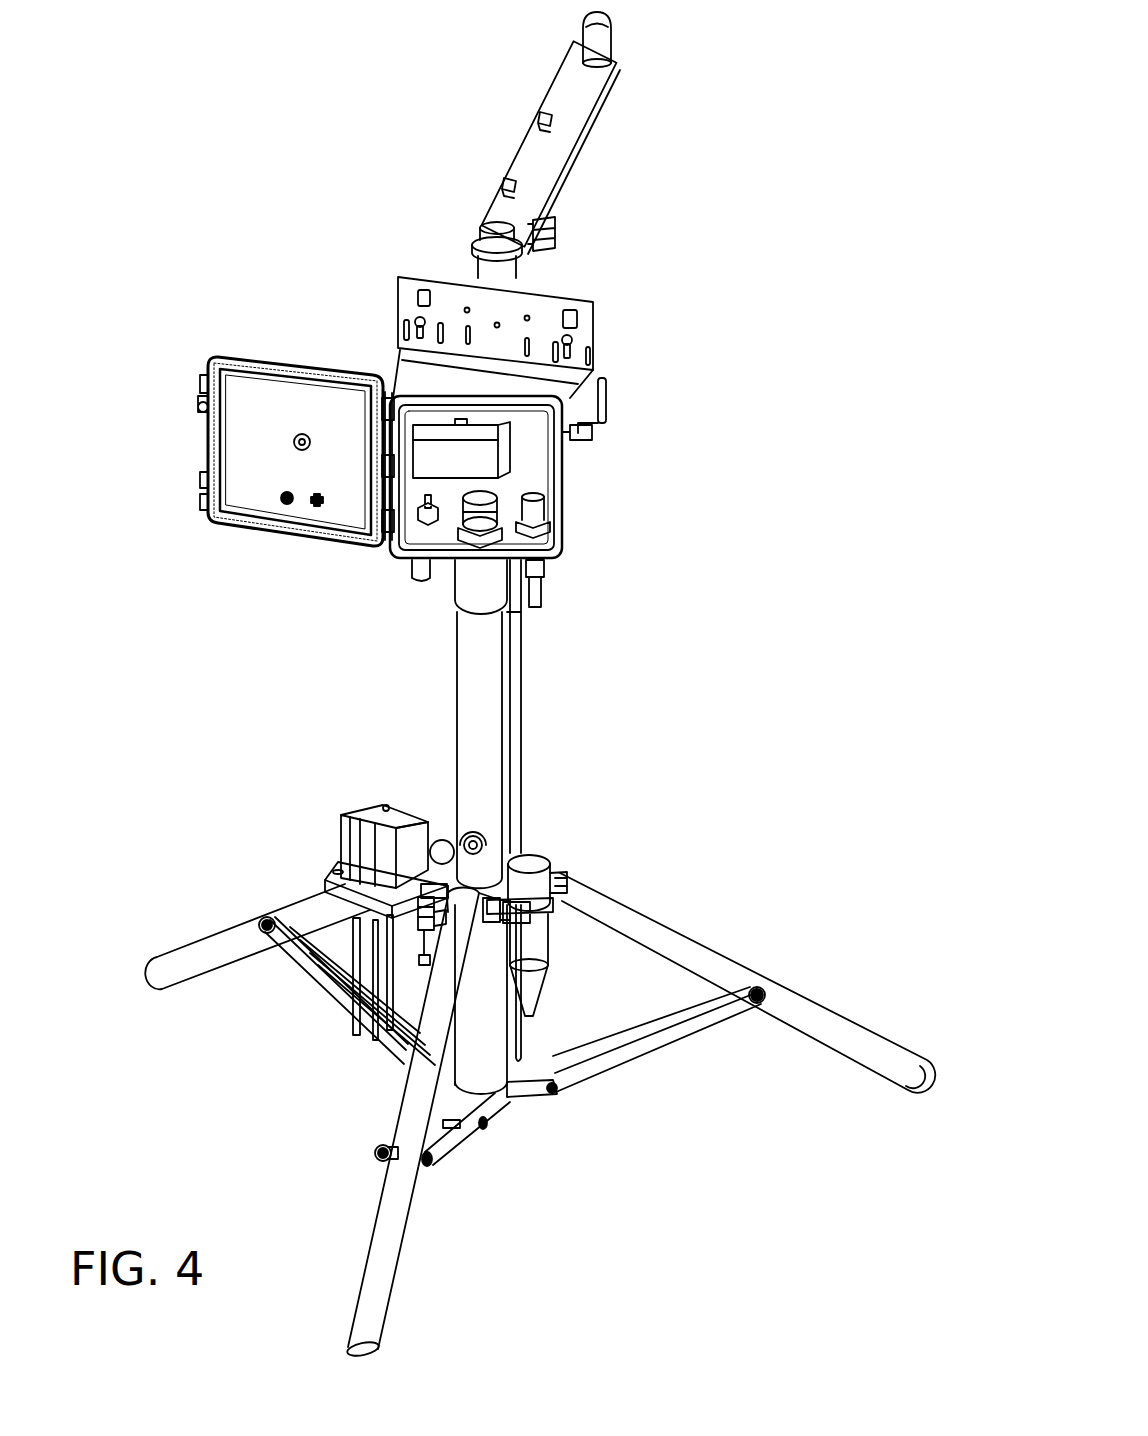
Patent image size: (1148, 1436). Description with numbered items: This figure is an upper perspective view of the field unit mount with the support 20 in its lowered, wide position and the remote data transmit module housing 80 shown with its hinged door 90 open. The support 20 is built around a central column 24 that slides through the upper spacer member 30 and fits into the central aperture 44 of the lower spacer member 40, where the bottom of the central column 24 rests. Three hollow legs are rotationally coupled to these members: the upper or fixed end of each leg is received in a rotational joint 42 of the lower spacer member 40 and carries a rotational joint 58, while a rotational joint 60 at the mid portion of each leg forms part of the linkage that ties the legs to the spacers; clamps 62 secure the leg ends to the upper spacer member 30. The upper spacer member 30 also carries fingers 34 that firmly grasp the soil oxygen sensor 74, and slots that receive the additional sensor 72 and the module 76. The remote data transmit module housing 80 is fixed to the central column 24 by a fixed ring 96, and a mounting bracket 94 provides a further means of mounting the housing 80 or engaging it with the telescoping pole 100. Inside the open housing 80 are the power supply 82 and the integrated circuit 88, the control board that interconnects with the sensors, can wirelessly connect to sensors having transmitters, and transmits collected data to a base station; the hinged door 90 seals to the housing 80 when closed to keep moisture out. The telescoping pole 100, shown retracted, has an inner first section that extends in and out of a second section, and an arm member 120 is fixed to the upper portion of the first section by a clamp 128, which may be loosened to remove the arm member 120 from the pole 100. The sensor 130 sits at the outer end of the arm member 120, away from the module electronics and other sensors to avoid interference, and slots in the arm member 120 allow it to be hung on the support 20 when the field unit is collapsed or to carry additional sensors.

The support 20 is at (380, 746).
The central column 24 is at (485, 657).
The upper spacer member 30 is at (420, 885).
The fingers 34 is at (540, 852).
The lower spacer member 40 is at (467, 1107).
The rotational joint 42 is at (556, 1094).
The central aperture 44 is at (503, 1097).
The rotational joint 58 is at (550, 903).
The rotational joint 60 is at (758, 1003).
The clamps 62 is at (426, 915).
The sensor 72 is at (345, 837).
The soil oxygen sensor 74 is at (543, 856).
The module 76 is at (393, 825).
The housing 80 is at (427, 377).
The power supply 82 is at (452, 465).
The integrated circuit 88 is at (556, 478).
The hinged door 90 is at (248, 431).
The mounting bracket 94 is at (547, 321).
The fixed ring 96 is at (487, 542).
The telescoping pole 100 is at (592, 700).
The arm member 120 is at (578, 108).
The clamp 128 is at (556, 231).
The sensor 130 is at (597, 48).